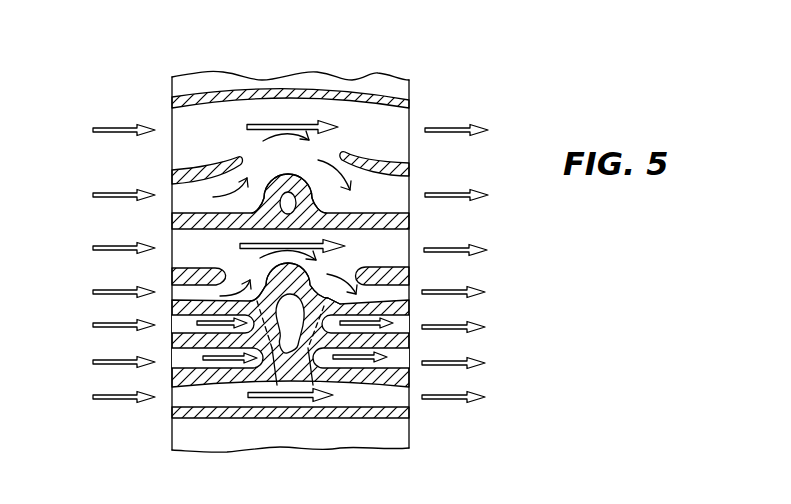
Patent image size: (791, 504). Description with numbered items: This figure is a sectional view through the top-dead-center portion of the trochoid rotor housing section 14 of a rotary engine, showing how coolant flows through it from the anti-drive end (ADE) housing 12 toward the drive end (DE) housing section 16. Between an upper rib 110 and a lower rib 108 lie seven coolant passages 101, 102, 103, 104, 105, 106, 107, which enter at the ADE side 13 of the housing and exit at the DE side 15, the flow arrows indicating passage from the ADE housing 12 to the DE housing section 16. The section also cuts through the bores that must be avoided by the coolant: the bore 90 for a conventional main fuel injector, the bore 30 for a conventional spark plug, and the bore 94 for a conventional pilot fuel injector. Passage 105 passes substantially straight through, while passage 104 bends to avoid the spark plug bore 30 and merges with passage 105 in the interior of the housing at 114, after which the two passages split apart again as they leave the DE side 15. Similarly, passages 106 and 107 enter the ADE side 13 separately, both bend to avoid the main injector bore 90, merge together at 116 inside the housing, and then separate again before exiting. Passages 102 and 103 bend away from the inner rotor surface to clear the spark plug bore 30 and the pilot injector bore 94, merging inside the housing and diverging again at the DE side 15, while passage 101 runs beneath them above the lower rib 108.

The anti-drive end (ADE) housing 12 is at (32, 292).
The ADE side of TDC portion 13 is at (172, 217).
The trochoid rotor housing section 14 is at (166, 441).
The DE side of TDC portion 15 is at (412, 115).
The drive end (DE) housing section 16 is at (577, 284).
The spark plug bore 30 is at (276, 300).
The main fuel injector bore 90 is at (279, 178).
The pilot fuel injector bore 94 is at (280, 356).
The coolant passage 101 is at (172, 388).
The coolant passage 102 is at (172, 357).
The coolant passage 103 is at (172, 322).
The coolant passage 104 is at (172, 290).
The coolant passage 105 is at (172, 235).
The coolant passage 106 is at (172, 185).
The coolant passage 107 is at (172, 143).
The rib 108 is at (312, 418).
The rib 110 is at (330, 93).
The merge point of passages 104 and 105 114 is at (304, 232).
The merge point of passages 106 and 107 116 is at (275, 112).